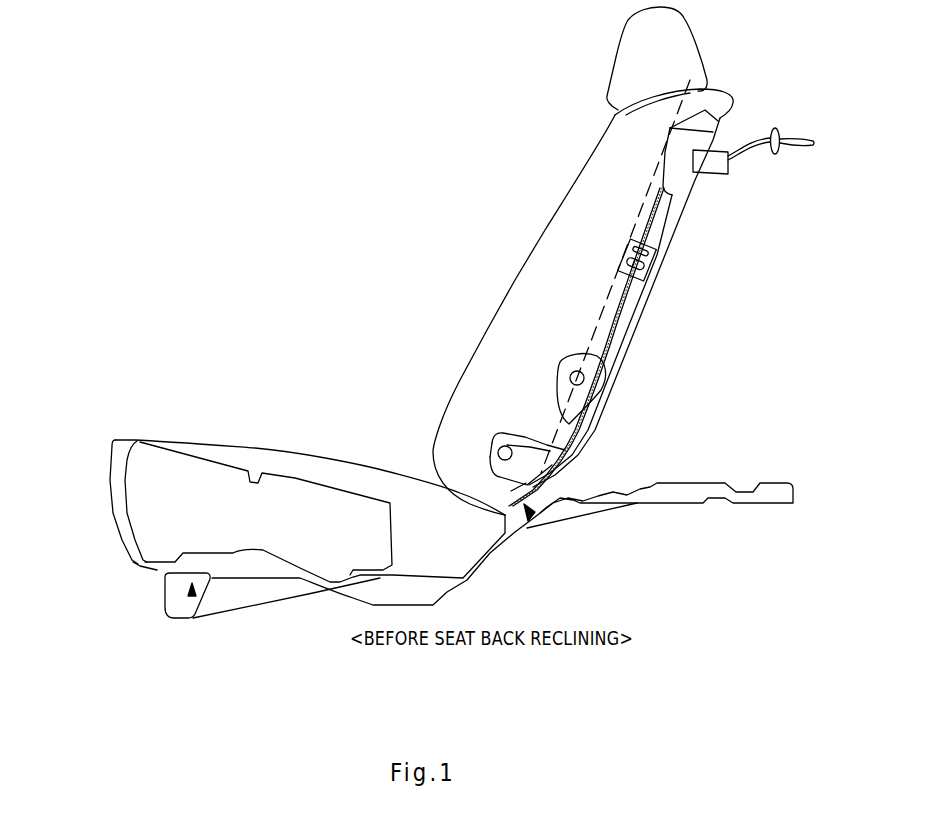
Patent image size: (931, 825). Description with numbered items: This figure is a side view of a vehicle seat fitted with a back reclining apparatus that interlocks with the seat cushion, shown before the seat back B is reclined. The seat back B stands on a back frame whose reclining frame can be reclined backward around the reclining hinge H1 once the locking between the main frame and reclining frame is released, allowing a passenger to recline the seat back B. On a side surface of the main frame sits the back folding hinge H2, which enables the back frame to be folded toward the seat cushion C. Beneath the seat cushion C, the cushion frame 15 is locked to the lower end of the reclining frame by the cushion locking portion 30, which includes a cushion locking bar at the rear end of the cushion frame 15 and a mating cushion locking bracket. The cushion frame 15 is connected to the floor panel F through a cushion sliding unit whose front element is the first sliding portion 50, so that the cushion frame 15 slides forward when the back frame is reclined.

The seat back B is at (527, 282).
The seat cushion C is at (255, 453).
The floor panel F is at (677, 498).
The reclining hinge H1 is at (584, 378).
The back folding hinge H2 is at (562, 440).
The cushion frame 15 is at (153, 570).
The cushion locking portion 30 is at (532, 518).
The first sliding portion 50 is at (191, 597).